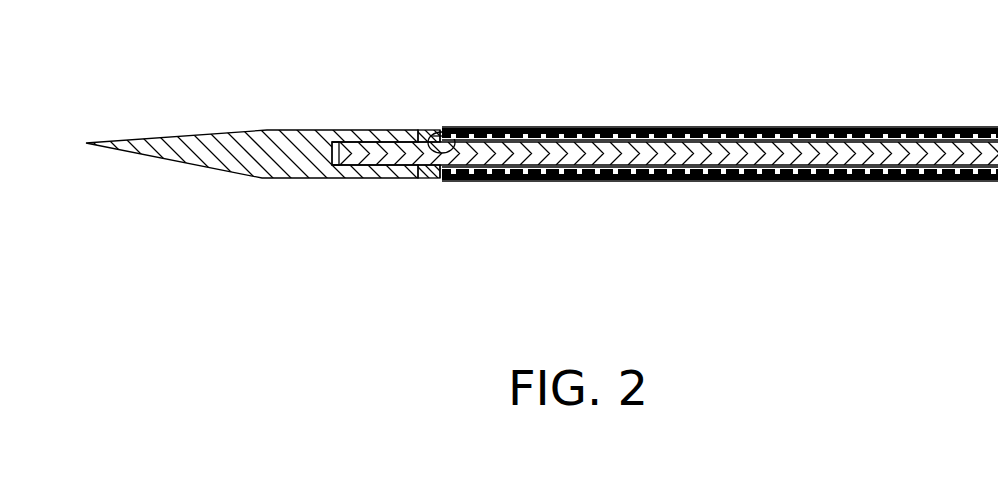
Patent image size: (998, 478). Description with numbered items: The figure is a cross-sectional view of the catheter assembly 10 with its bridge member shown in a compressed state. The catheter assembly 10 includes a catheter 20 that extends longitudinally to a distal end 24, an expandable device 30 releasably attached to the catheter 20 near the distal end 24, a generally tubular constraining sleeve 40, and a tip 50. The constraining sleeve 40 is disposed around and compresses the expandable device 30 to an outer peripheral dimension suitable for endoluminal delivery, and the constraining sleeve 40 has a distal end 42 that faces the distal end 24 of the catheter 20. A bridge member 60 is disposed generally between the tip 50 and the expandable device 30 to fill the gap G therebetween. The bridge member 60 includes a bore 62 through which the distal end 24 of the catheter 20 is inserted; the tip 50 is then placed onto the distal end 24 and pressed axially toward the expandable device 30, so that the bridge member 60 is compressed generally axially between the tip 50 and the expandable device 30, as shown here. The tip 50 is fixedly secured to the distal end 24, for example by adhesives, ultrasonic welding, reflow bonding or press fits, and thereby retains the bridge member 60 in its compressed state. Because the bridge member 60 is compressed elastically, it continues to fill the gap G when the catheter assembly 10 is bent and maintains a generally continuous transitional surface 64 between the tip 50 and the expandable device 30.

The catheter assembly 10 is at (533, 205).
The catheter 20 is at (785, 160).
The distal end 24 is at (327, 141).
The expandable device 30 is at (657, 179).
The constraining sleeve 40 is at (577, 179).
The distal end 42 is at (448, 128).
The tip 50 is at (172, 141).
The bridge member 60 is at (425, 180).
The bore 62 is at (457, 128).
The transitional surface 64 is at (435, 128).
The gap G is at (438, 182).